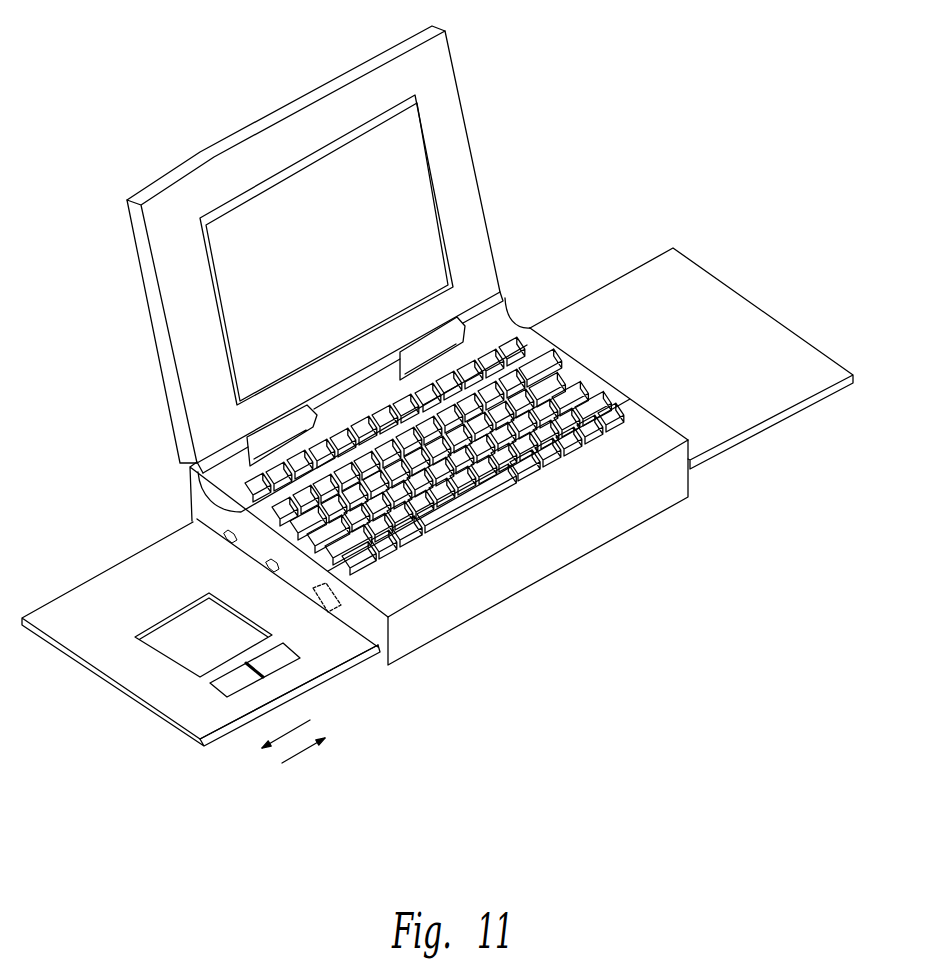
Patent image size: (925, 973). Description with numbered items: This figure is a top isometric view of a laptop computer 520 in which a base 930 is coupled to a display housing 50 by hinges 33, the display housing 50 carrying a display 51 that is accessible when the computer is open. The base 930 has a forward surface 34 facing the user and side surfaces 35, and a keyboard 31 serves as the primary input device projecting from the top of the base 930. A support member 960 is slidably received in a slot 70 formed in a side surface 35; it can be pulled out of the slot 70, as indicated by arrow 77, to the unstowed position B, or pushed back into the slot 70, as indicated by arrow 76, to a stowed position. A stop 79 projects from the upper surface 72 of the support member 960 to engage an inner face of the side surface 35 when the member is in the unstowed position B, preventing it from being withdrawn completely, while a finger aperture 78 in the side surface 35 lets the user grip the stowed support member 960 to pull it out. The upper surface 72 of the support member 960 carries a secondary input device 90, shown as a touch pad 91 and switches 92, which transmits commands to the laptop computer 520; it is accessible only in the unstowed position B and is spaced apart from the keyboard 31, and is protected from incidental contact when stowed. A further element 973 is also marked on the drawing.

The display housing 50 is at (342, 249).
The display 51 is at (241, 228).
The hinges 33 is at (425, 340).
The keyboard 31 is at (437, 462).
The forward surface 34 is at (500, 583).
The base 930 is at (538, 317).
The support member 960 is at (752, 300).
The laptop computer 520 is at (638, 142).
The upper surface 72 is at (110, 580).
The arrow 77 is at (253, 718).
The stop 79 is at (226, 537).
The finger aperture 78 is at (268, 568).
The secondary input device 90 is at (175, 674).
The touch pad 91 is at (182, 643).
The switches 92 is at (228, 683).
The arrow 76 is at (307, 753).
The slot 70 is at (338, 620).
The side surface 35 is at (360, 617).
The key 973 is at (377, 560).
The unstowed position B is at (203, 747).